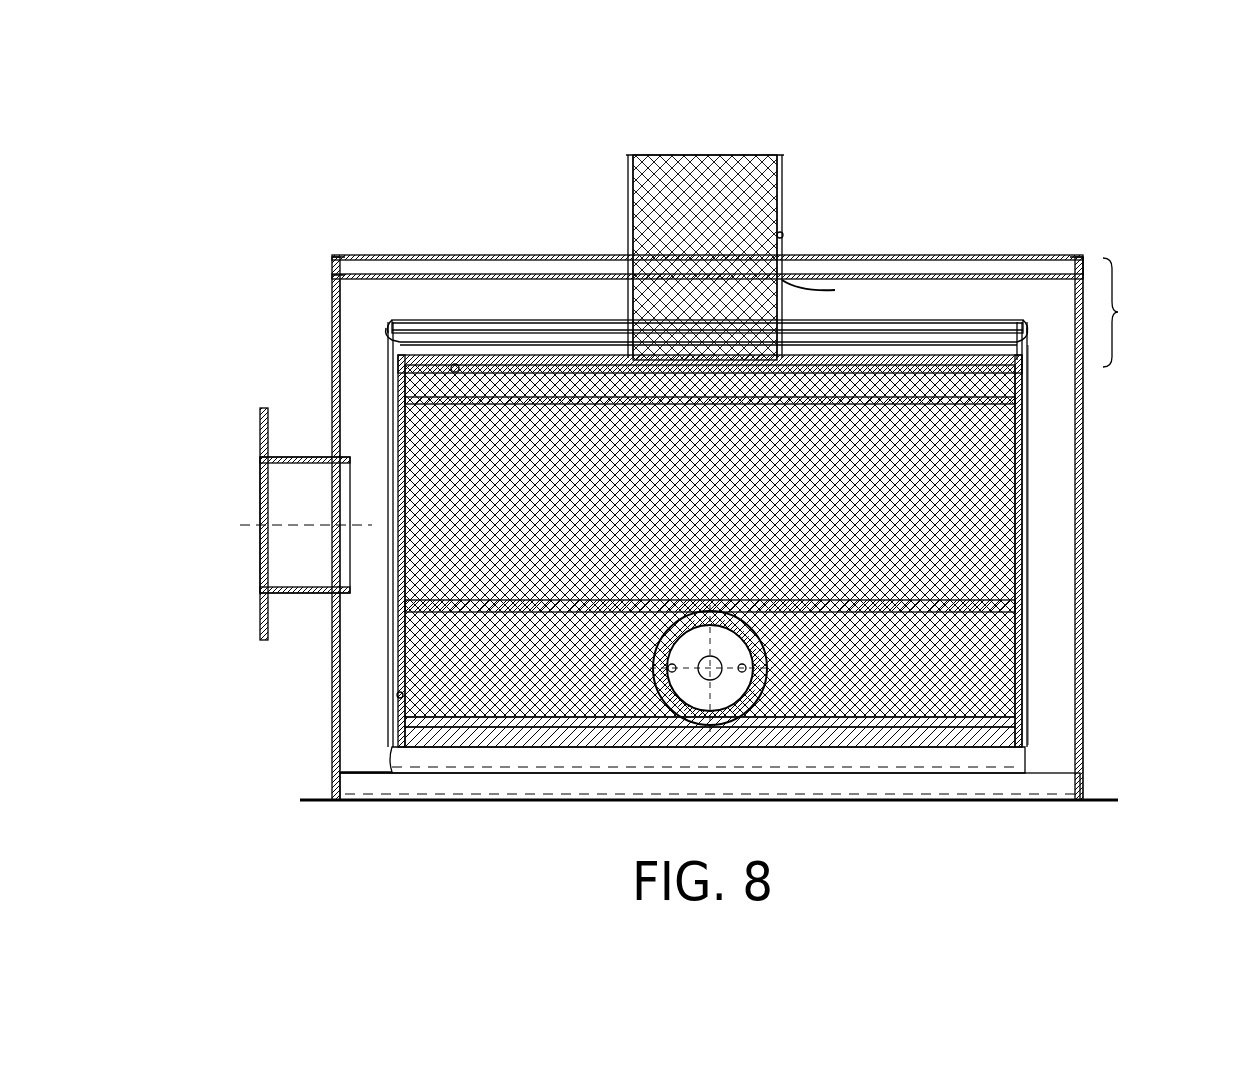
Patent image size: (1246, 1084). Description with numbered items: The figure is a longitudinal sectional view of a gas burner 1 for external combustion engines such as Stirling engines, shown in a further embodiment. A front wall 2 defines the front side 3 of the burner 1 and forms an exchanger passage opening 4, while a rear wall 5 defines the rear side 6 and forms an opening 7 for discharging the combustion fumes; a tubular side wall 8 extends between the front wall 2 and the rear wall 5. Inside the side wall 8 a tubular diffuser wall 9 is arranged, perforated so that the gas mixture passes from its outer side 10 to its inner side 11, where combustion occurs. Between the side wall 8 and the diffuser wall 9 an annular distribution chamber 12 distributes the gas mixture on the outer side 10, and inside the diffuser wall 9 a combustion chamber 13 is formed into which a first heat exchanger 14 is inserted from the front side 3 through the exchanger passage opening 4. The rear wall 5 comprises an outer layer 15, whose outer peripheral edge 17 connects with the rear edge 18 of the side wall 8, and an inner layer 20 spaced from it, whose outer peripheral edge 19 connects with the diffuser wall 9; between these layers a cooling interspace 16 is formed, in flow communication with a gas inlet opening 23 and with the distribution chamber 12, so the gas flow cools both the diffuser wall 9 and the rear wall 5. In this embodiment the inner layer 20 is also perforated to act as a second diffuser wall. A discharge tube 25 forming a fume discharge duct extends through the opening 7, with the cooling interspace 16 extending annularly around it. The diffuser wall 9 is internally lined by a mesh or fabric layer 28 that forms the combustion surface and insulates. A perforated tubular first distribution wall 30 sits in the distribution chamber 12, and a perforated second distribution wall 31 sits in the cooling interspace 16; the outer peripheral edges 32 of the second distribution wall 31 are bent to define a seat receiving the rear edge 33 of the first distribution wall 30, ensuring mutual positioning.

The gas burner 1 is at (1108, 445).
The front wall 2 is at (1050, 777).
The front side 3 is at (682, 796).
The exchanger passage opening 4 is at (580, 715).
The rear wall 5 is at (1119, 312).
The rear side 6 is at (842, 197).
The opening for discharging the combustion fumes 7 is at (630, 215).
The tubular side wall 8 is at (1082, 603).
The tubular diffuser wall 9 is at (1025, 610).
The outer side of the diffuser wall 10 is at (1025, 636).
The inner side of the diffuser wall 11 is at (1028, 693).
The annular distribution chamber 12 is at (1058, 557).
The combustion chamber 13 is at (585, 560).
The first heat exchanger 14 is at (711, 670).
The outer layer 15 is at (968, 320).
The cooling interspace 16 is at (699, 302).
The outer peripheral edge of the outer layer 17 is at (1075, 262).
The rear edge of the side wall 18 is at (335, 268).
The outer peripheral edge of the inner layer 19 is at (1005, 355).
The inner layer 20 is at (903, 353).
The gas inlet opening 23 is at (340, 485).
The discharge tube 25 is at (782, 290).
The mesh or fabric layer 28 is at (455, 365).
The first distribution wall 30 is at (1025, 580).
The second distribution wall 31 is at (430, 340).
The outer peripheral edges of the second distribution wall 32 is at (398, 323).
The rear edge of the first distribution wall 33 is at (395, 327).